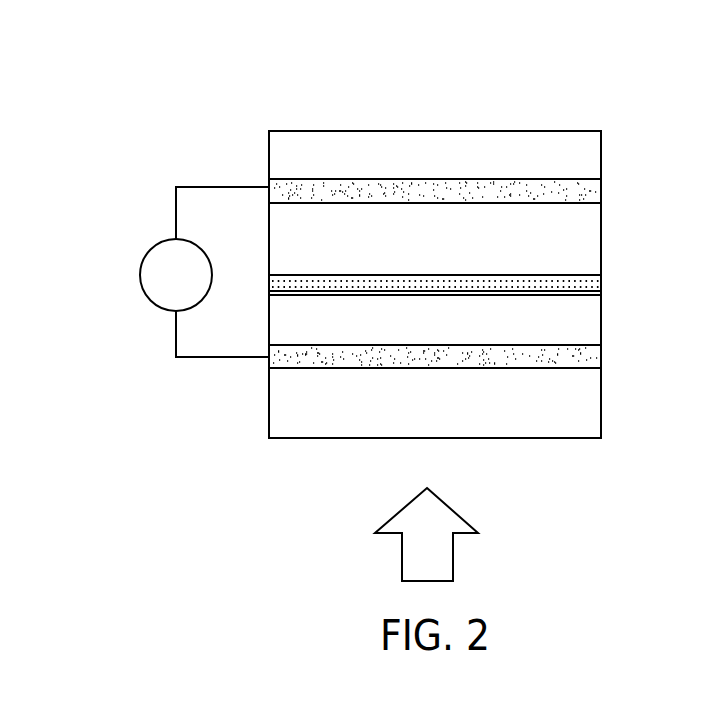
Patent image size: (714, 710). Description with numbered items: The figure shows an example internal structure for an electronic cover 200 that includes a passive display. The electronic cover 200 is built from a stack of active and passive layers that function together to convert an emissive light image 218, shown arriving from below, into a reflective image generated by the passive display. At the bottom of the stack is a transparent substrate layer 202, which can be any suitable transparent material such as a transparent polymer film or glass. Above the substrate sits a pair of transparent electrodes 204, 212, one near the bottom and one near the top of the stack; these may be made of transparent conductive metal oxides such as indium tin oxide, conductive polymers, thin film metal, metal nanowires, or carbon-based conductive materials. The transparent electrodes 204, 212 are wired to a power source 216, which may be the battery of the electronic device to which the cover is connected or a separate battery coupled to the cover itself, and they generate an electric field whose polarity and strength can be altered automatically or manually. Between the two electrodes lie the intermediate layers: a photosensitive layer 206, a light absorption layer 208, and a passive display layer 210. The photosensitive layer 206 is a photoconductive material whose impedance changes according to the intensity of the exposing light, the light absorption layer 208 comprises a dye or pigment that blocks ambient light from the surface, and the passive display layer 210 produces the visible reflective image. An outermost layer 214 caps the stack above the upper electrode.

The electronic cover 200 is at (160, 99).
The transparent substrate layer 202 is at (595, 401).
The transparent electrode 204 is at (595, 358).
The photosensitive layer 206 is at (595, 327).
The light absorption layer 208 is at (595, 282).
The passive display layer 210 is at (595, 235).
The transparent electrode 212 is at (595, 191).
The top substrate / protective layer 214 is at (595, 149).
The power source 216 is at (140, 272).
The emissive light image 218 is at (398, 508).